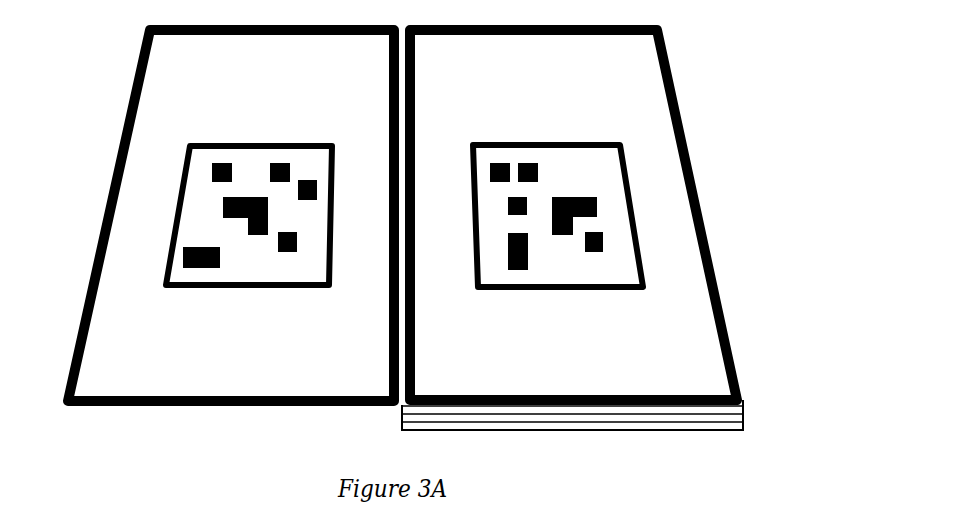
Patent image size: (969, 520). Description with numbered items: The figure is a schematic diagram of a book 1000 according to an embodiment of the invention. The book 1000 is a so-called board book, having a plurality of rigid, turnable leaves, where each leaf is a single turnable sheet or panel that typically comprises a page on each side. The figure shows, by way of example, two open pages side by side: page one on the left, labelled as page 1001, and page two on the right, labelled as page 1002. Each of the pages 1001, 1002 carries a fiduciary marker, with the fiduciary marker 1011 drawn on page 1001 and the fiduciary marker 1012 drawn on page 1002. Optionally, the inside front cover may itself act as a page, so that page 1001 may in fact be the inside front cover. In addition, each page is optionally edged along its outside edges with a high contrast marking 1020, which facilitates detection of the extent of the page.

The book 1000 is at (406, 236).
The page 1 1001 is at (213, 215).
The page 2 1002 is at (595, 215).
The fiduciary marker 1011 is at (168, 180).
The fiduciary marker 1012 is at (641, 180).
The high contrast marking 1020 is at (595, 208).